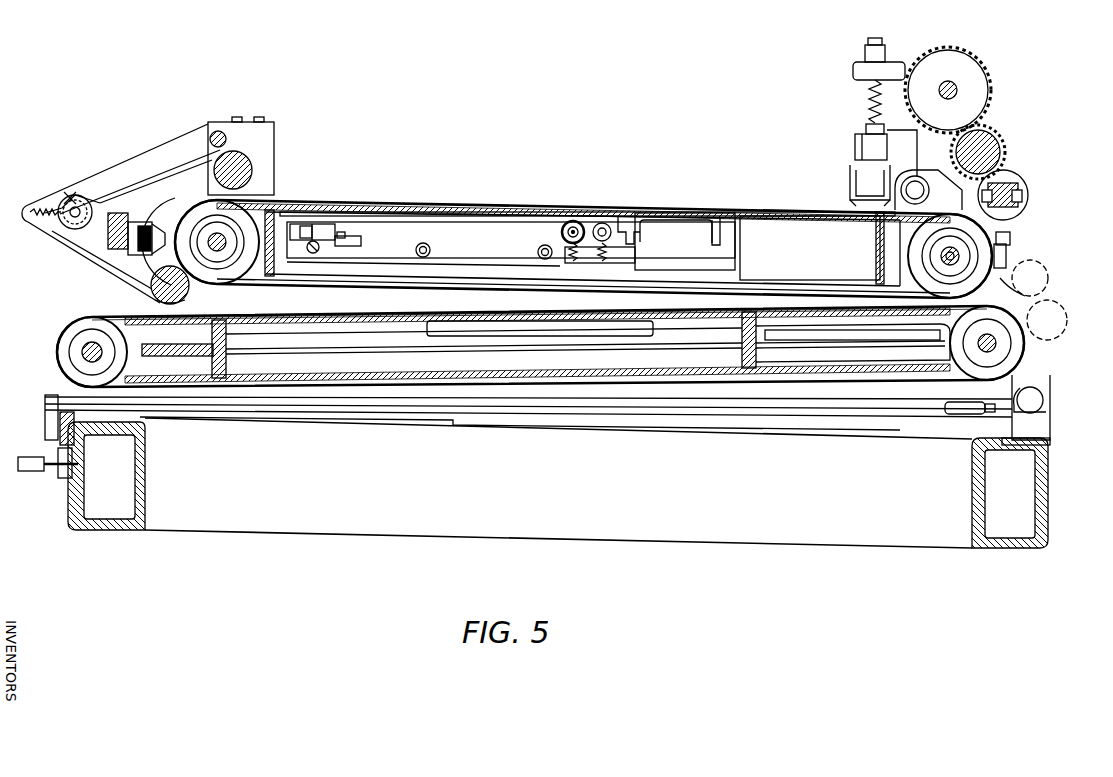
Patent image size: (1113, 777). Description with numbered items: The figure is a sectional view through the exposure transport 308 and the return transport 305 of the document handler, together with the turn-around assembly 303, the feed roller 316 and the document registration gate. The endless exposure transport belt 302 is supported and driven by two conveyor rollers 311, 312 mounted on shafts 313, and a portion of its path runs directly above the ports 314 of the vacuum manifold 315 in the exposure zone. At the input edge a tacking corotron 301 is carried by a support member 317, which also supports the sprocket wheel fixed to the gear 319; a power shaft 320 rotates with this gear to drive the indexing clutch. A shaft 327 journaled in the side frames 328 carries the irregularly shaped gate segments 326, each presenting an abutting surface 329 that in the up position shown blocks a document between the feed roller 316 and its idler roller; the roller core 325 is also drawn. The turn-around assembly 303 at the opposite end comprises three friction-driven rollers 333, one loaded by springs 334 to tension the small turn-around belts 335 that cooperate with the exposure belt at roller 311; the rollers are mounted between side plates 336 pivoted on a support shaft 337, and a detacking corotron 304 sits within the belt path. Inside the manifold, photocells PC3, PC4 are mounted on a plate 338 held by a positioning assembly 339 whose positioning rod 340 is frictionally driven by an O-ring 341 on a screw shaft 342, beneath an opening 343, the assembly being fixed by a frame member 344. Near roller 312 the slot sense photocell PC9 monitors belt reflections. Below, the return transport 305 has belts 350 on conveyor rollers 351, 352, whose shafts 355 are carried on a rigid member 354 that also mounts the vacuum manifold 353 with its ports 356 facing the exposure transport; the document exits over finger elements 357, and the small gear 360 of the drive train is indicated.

The tacking corotron 301 is at (848, 186).
The exposure transport belt 302 is at (770, 208).
The turn-around assembly 303 is at (80, 168).
The detacking corotron 304 is at (140, 248).
The return transport 305 is at (528, 400).
The exposure transport 308 is at (466, 195).
The conveyor roller 311 is at (236, 216).
The conveyor roller 312 is at (985, 244).
The shaft 313 is at (272, 236).
The ports 314 is at (716, 208).
The vacuum manifold 315 is at (858, 243).
The feed roller 316 is at (1000, 146).
The support member 317 is at (855, 148).
The gear 319 is at (970, 72).
The power shaft 320 is at (958, 90).
The roller core 325 is at (994, 156).
The document registration gate segment 326 is at (1023, 212).
The shaft 327 is at (1024, 188).
The side frames 328 is at (278, 148).
The abutting surface 329 is at (1008, 173).
The turn-around rollers 333 is at (262, 150).
The springs 334 is at (60, 230).
The turn-around belts 335 is at (172, 166).
The side plates 336 is at (130, 165).
The support shaft 337 is at (219, 131).
The plate 338 is at (322, 232).
The positioning assembly 339 is at (707, 259).
The positioning rod 340 is at (448, 250).
The O-ring 341 is at (562, 231).
The screw shaft 342 is at (603, 222).
The opening 343 is at (376, 207).
The frame member 344 is at (710, 236).
The return transport belts 350 is at (83, 314).
The conveyor roller 351 is at (120, 366).
The conveyor roller 352 is at (1014, 346).
The vacuum manifold 353 is at (400, 338).
The rigid member 354 is at (1043, 423).
The shafts 355 is at (102, 350).
The ports 356 is at (552, 323).
The finger elements 357 is at (1036, 272).
The small gear 360 is at (1052, 312).
The photocell PC3 is at (340, 234).
The photocell PC4 is at (313, 232).
The slot sense photocell PC9 is at (1010, 250).